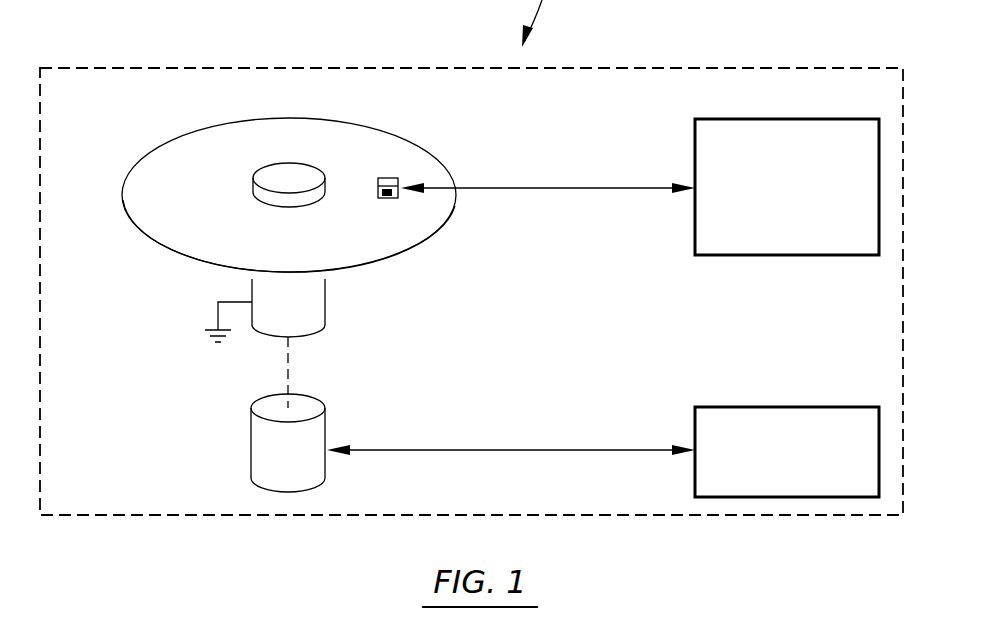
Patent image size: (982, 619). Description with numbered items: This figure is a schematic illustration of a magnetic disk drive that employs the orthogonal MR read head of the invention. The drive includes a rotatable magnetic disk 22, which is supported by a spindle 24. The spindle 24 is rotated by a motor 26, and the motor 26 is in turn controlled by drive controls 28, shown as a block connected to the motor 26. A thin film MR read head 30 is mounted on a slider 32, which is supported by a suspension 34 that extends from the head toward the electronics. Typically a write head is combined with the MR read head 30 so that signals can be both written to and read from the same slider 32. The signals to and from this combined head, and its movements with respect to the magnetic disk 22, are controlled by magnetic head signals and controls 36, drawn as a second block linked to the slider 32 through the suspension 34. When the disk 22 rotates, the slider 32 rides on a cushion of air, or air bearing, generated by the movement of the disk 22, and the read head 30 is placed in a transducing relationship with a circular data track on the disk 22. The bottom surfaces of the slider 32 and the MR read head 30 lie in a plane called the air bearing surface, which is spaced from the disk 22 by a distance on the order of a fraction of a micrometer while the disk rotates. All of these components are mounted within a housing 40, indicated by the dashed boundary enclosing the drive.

The housing 40 is at (208, 68).
The rotatable magnetic disk 22 is at (160, 158).
The spindle 24 is at (327, 303).
The motor 26 is at (251, 450).
The drive controls 28 is at (795, 407).
The thin film MR read head 30 is at (392, 198).
The slider 32 is at (388, 178).
The suspension 34 is at (540, 189).
The magnetic head signals and controls 36 is at (795, 118).